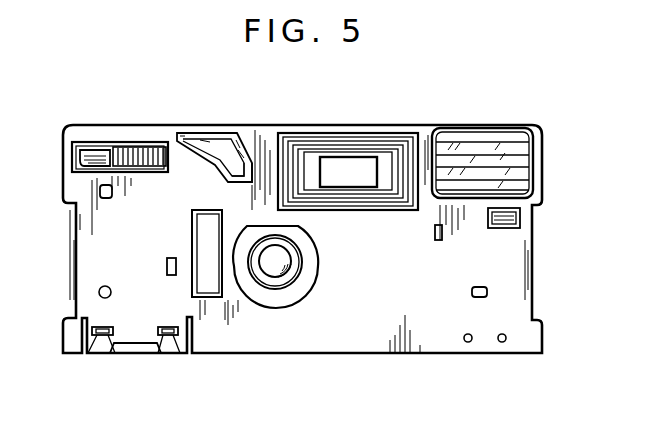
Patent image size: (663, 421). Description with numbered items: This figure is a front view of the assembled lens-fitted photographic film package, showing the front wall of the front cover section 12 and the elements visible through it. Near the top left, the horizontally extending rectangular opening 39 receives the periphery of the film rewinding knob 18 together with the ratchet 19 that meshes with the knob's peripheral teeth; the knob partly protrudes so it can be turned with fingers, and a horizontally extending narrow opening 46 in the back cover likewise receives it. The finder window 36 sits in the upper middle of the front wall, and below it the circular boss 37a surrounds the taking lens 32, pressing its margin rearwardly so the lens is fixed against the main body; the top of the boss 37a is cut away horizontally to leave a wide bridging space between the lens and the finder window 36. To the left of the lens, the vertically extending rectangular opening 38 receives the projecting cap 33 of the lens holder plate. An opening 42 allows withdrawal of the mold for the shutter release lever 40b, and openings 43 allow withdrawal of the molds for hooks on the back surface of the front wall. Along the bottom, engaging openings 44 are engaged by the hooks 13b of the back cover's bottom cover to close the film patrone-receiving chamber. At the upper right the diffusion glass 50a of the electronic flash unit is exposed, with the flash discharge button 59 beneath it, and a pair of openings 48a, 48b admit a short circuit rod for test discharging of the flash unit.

The front cover section 12 is at (463, 112).
The hooks 13b is at (115, 353).
The film rewinding knob 18 is at (143, 148).
The ratchet 19 is at (104, 150).
The taking lens 32 is at (283, 268).
The projecting cap 33 is at (200, 232).
The finder window 36 is at (350, 178).
The circular boss 37a is at (310, 258).
The vertically extending rectangular opening 38 is at (222, 292).
The horizontally extending rectangular opening 39 is at (88, 150).
The shutter release lever 40b is at (222, 132).
The opening 42 is at (236, 176).
The openings 43 is at (434, 232).
The engaging openings 44 is at (86, 353).
The horizontally extending narrow opening 46 is at (521, 216).
The opening 48a is at (466, 342).
The opening 48b is at (503, 342).
The diffusion glass 50a is at (525, 155).
The flash discharge button 59 is at (503, 228).